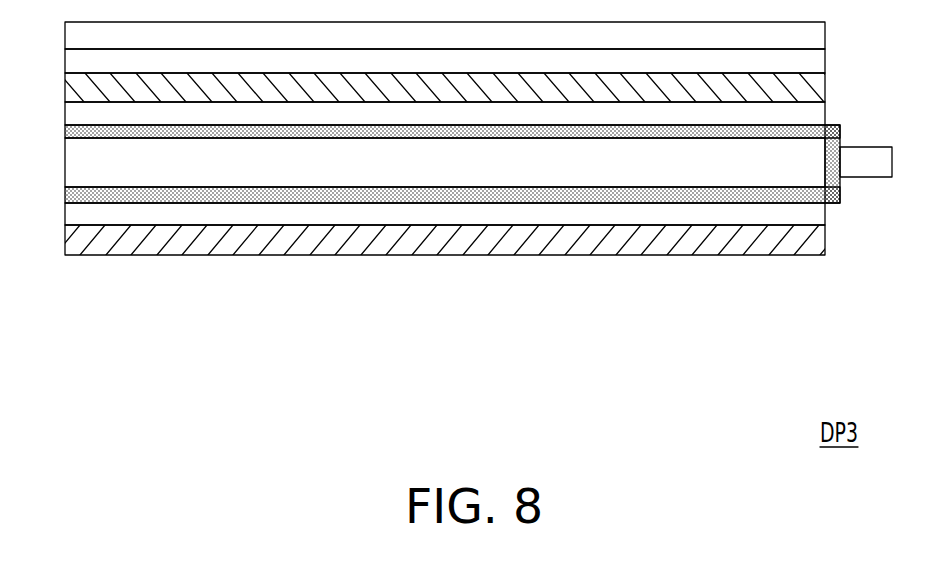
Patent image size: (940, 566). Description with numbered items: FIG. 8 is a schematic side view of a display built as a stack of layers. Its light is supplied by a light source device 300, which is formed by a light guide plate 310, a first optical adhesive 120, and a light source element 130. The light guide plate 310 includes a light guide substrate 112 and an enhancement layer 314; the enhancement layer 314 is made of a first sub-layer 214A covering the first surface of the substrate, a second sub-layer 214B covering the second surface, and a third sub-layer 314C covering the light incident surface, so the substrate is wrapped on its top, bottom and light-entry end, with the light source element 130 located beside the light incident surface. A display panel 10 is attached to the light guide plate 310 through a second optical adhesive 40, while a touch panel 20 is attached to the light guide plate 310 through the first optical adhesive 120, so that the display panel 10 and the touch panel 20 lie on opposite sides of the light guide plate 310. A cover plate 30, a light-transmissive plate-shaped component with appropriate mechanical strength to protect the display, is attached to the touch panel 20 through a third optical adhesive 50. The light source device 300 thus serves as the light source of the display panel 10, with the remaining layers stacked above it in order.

The display panel 10 is at (68, 233).
The touch panel 20 is at (68, 83).
The cover plate 30 is at (73, 32).
The second optical adhesive 40 is at (70, 210).
The third optical adhesive 50 is at (72, 60).
The light guide substrate 112 is at (658, 163).
The first optical adhesive 120 is at (818, 113).
The light source element 130 is at (860, 153).
The first sub-layer 214A is at (748, 132).
The second sub-layer 214B is at (777, 195).
The light source device 300 is at (440, 261).
The light guide plate 310 is at (462, 261).
The enhancement layer 314 is at (462, 239).
The third sub-layer 314C is at (835, 216).